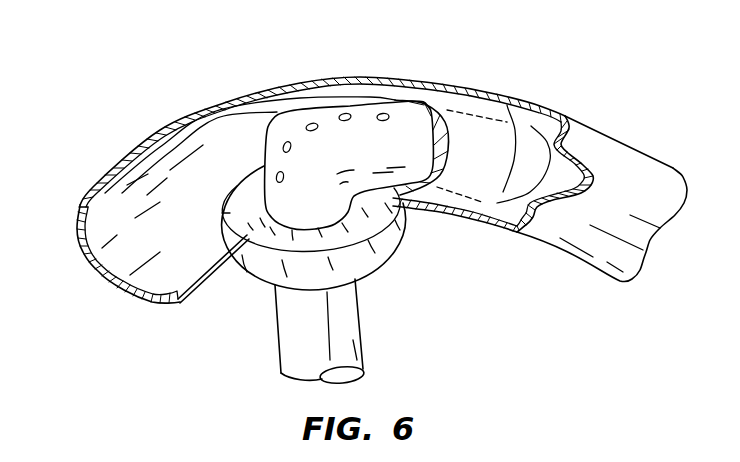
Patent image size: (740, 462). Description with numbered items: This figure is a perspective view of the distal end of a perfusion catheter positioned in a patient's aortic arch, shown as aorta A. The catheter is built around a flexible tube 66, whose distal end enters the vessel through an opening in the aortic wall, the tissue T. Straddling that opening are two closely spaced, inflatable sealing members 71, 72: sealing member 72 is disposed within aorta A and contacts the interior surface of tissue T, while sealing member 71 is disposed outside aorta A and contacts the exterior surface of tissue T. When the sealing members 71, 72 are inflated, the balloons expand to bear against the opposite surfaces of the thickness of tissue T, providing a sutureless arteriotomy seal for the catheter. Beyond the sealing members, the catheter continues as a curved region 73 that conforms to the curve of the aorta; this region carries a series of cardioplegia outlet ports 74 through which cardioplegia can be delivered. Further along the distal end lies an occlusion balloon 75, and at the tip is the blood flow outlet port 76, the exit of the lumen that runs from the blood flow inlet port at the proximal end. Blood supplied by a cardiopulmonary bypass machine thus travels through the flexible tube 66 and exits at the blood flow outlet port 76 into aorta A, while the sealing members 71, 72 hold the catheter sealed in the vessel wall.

The flexible tube 66 is at (340, 320).
The sealing member 71 is at (233, 213).
The sealing member 72 is at (243, 265).
The curved region 73 is at (220, 113).
The cardioplegia outlet ports 74 is at (345, 113).
The occlusion balloon 75 is at (471, 103).
The blood flow outlet port 76 is at (550, 163).
The aorta A is at (637, 157).
The tissue T is at (447, 222).